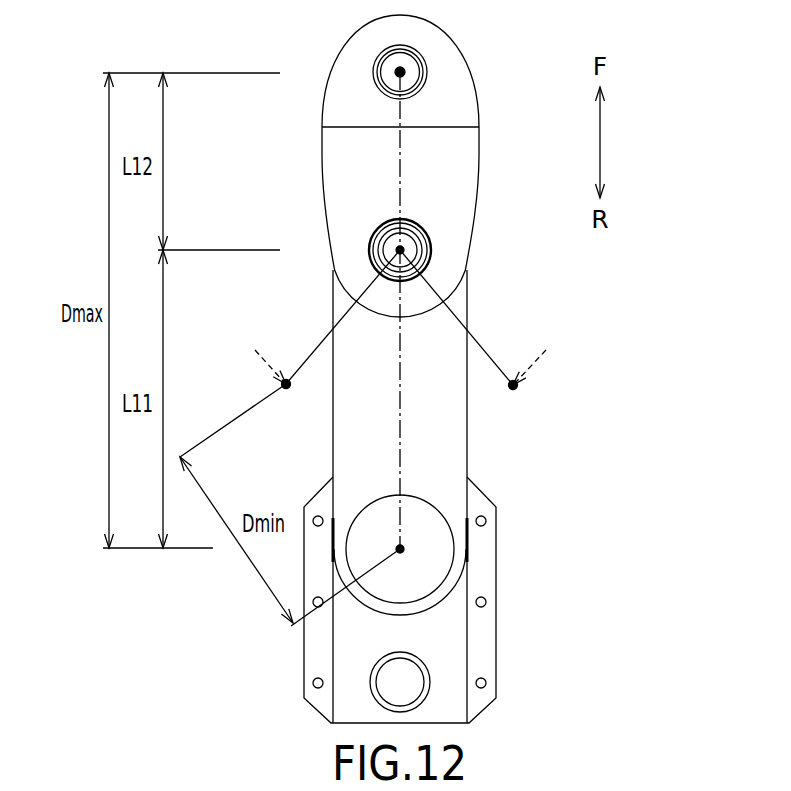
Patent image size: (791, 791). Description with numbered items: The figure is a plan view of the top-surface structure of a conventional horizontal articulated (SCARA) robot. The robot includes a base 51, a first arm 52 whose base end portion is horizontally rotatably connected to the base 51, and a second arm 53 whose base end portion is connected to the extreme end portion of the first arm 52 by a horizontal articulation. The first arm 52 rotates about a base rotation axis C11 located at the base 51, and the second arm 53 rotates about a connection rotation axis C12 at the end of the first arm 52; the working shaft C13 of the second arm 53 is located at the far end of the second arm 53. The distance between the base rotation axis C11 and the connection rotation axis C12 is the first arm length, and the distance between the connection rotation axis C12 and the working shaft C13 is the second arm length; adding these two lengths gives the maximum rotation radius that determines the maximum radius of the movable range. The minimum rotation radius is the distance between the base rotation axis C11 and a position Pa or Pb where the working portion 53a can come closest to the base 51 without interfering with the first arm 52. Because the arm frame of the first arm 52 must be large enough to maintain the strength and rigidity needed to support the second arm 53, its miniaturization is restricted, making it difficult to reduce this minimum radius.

The base 51 is at (460, 658).
The first arm 52 is at (460, 462).
The second arm 53 is at (463, 157).
The working portion 53a is at (410, 57).
The base rotation axis C11 is at (400, 549).
The connection rotation axis C12 is at (437, 214).
The working shaft C13 is at (400, 72).
The position Pa is at (286, 388).
The position Pb is at (513, 389).